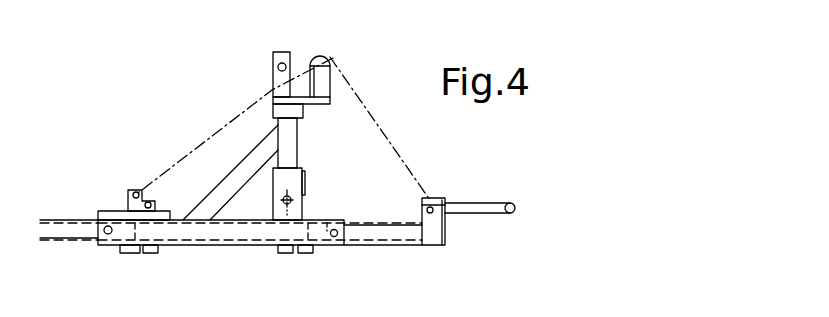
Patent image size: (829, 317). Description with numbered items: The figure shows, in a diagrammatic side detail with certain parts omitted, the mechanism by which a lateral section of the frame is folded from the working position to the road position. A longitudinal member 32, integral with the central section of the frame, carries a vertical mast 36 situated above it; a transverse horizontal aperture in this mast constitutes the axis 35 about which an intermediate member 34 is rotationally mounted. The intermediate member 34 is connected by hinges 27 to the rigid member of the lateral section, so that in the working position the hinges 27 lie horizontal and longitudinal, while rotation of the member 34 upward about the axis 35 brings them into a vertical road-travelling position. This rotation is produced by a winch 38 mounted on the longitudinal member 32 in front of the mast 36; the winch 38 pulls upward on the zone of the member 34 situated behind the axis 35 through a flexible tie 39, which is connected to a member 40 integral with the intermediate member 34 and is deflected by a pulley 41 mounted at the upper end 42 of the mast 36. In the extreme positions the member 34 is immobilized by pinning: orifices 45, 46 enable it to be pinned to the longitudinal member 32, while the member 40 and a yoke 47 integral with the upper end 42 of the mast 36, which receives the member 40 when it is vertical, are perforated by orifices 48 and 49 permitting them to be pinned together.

The hinges 27 is at (277, 247).
The longitudinal member 32 is at (368, 232).
The intermediate member 34 is at (203, 233).
The axis 35 is at (300, 200).
The vertical mast 36 is at (297, 155).
The winch 38 is at (435, 198).
The flexible tie 39 is at (368, 114).
The member 40 is at (127, 190).
The pulley 41 is at (318, 73).
The upper end 42 is at (303, 113).
The orifice 45 is at (334, 237).
The orifice 46 is at (104, 226).
The yoke 47 is at (290, 52).
The orifice 48 is at (152, 205).
The orifice 49 is at (278, 67).